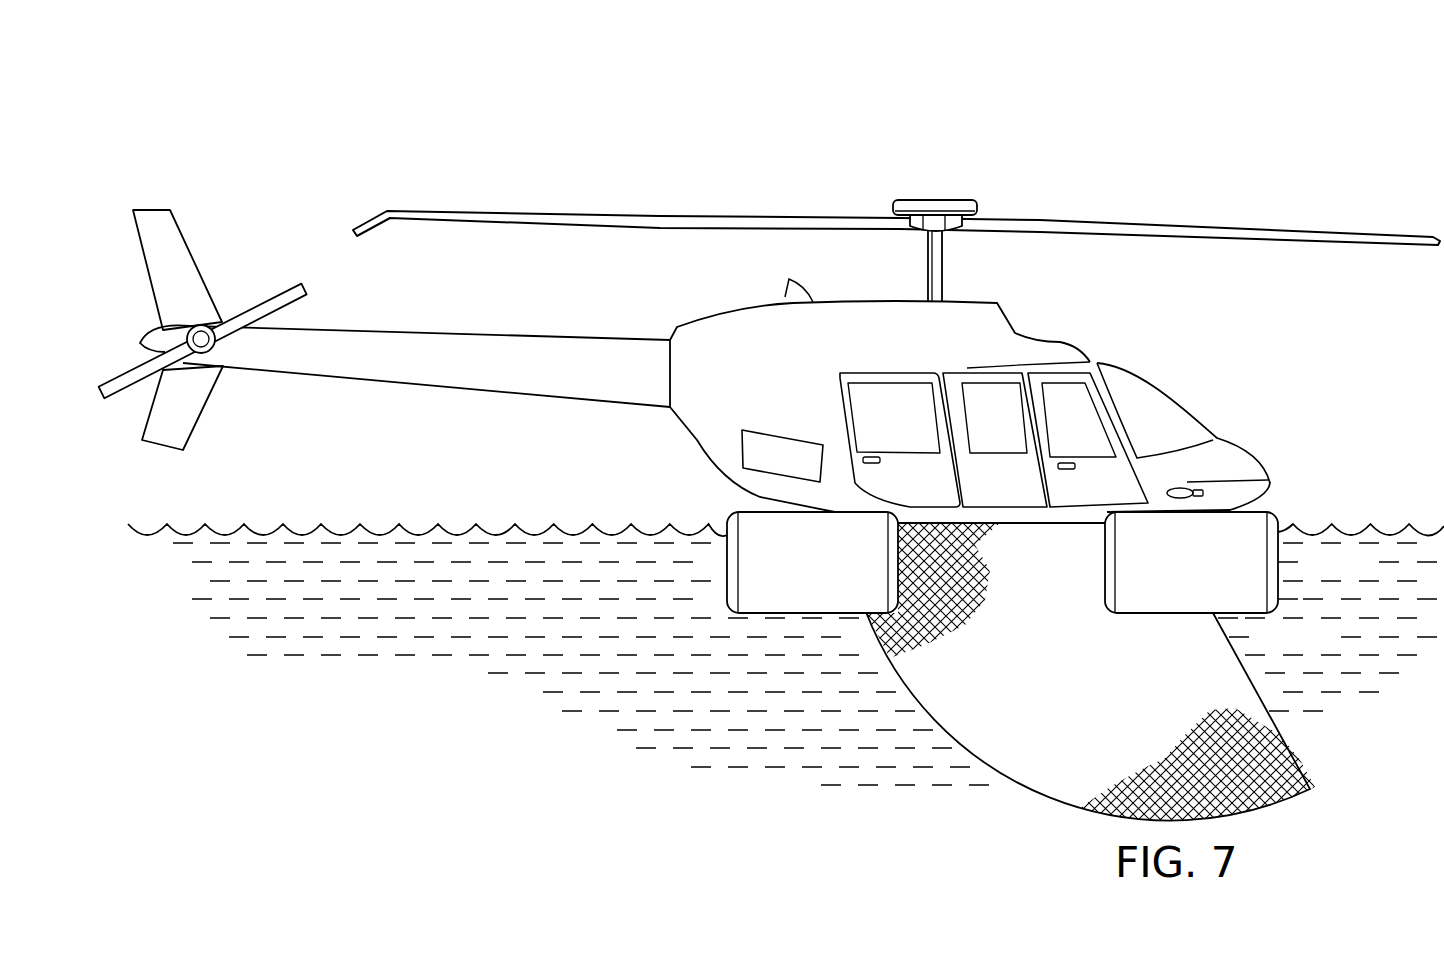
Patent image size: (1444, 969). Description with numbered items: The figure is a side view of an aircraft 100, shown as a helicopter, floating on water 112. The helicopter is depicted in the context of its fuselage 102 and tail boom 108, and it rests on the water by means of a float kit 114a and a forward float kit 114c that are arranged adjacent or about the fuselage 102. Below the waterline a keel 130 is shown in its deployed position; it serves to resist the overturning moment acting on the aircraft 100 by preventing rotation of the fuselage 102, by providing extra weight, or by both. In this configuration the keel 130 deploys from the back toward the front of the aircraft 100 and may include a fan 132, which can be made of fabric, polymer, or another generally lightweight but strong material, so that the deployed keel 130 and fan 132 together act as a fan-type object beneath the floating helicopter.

The aircraft 100 is at (1186, 102).
The fuselage 102 is at (1240, 447).
The tail boom 108 is at (546, 335).
The water 112 is at (417, 530).
The float kit 114a is at (727, 560).
The forward float kit 114c is at (1280, 553).
The keel 130 is at (1210, 675).
The fan 132 is at (1101, 680).